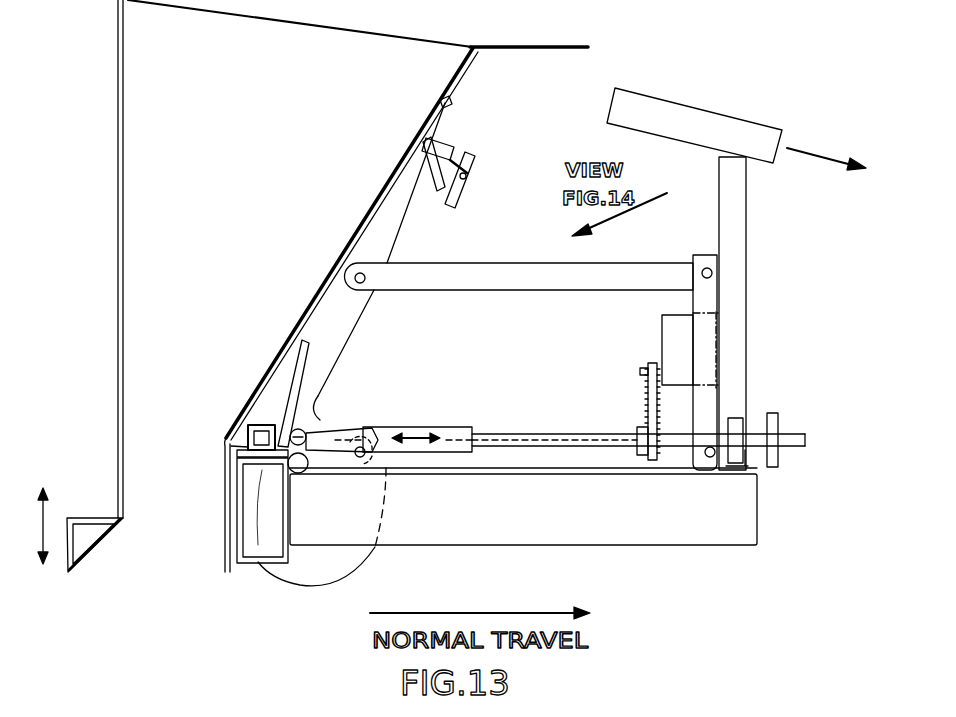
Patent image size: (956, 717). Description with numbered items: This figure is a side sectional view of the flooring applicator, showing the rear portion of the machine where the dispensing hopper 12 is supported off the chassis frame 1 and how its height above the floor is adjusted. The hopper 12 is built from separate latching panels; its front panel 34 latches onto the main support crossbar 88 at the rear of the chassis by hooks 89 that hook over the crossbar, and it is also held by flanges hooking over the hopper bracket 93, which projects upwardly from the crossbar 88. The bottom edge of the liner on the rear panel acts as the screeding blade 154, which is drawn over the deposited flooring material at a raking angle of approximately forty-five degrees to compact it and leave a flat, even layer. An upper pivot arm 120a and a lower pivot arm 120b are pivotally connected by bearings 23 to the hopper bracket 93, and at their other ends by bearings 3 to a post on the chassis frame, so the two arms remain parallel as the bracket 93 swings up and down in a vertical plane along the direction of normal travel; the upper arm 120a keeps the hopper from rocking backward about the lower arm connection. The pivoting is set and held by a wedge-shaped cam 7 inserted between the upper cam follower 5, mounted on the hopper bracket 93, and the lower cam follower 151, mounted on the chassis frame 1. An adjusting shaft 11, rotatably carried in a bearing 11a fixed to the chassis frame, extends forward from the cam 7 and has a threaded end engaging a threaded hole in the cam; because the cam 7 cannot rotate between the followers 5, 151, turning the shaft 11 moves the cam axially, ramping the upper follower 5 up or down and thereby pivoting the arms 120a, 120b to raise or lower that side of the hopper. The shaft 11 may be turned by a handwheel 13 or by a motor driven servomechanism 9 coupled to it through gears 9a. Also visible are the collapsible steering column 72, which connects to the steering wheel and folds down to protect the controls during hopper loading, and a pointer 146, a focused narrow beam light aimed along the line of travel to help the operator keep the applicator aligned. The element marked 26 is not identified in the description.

The chassis frame 1 is at (497, 528).
The bearings 3 is at (714, 274).
The upper cam follower 5 is at (298, 429).
The wedge-shaped cam 7 is at (437, 428).
The motor driven servomechanism 9 is at (663, 350).
The gears 9a is at (648, 396).
The adjusting shaft 11 is at (562, 434).
The bearing 11a is at (746, 462).
The hopper 12 is at (228, 243).
The handwheel 13 is at (780, 416).
The bearings 23 is at (365, 281).
The bumper housing 26 is at (253, 563).
The front panel 34 is at (323, 298).
The collapsible steering column 72 is at (746, 205).
The main support crossbar 88 is at (248, 443).
The hooks 89 is at (272, 400).
The hopper bracket 93 is at (398, 245).
The upper pivot arm 120a is at (558, 291).
The lower pivot arm 120b is at (556, 456).
The pointer 146 is at (742, 104).
The lower cam follower 151 is at (306, 472).
The screeding blade 154 is at (74, 570).